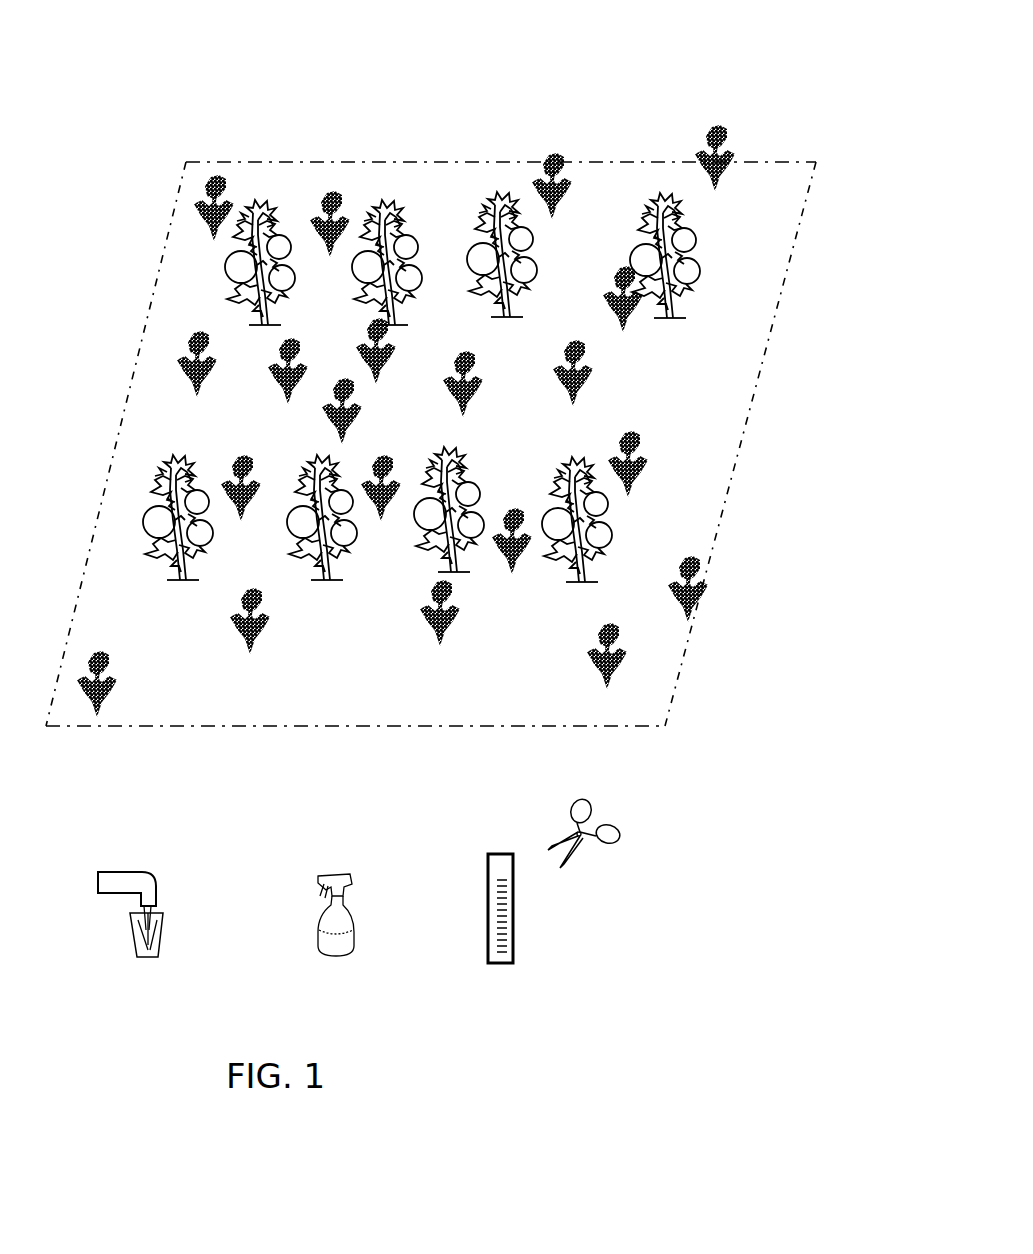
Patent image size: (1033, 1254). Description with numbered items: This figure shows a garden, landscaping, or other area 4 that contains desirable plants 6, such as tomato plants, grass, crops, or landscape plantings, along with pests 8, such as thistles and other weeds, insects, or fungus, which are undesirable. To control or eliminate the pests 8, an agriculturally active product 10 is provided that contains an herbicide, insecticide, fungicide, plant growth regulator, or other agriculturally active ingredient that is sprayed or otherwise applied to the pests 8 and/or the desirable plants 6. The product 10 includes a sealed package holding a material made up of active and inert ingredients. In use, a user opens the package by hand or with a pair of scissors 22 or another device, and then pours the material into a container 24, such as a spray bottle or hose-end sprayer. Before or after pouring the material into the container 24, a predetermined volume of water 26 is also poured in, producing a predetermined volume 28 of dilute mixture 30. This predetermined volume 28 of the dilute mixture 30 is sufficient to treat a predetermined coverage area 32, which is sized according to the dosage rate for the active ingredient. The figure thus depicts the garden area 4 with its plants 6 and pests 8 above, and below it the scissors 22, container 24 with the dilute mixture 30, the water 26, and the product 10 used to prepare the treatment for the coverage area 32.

The garden, landscaping, or other area 4 is at (465, 379).
The desirable plants 6 is at (422, 198).
The pests 8 is at (728, 120).
The predetermined coverage area 32 is at (738, 472).
The agriculturally active product 10 is at (460, 882).
The pair of scissors 22 is at (645, 818).
The container 24 is at (357, 969).
The predetermined volume of water 26 is at (165, 925).
The predetermined volume 28 is at (323, 922).
The dilute mixture 30 is at (335, 958).